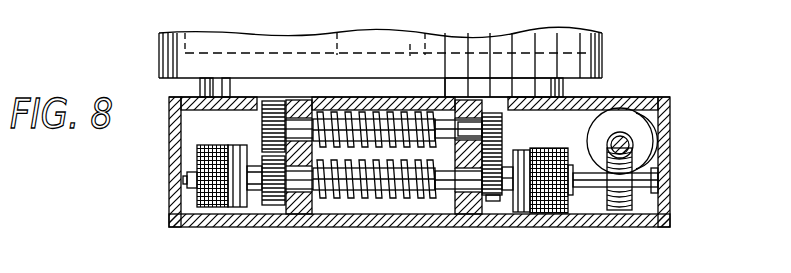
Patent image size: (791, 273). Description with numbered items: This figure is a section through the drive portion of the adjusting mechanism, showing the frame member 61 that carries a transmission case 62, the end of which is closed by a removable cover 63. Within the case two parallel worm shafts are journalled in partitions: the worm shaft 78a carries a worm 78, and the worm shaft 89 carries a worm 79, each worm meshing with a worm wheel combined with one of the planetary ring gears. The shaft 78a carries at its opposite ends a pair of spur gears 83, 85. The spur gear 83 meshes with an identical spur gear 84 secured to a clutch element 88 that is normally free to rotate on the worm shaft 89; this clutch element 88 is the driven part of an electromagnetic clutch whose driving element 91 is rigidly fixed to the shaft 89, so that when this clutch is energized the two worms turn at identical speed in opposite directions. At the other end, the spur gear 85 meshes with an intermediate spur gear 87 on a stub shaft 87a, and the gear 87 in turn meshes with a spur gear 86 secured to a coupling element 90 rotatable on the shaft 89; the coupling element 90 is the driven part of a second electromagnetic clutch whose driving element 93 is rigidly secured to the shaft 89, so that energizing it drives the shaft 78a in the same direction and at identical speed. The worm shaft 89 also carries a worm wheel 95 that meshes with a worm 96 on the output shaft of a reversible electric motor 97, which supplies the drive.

The frame member 61 is at (168, 50).
The transmission case 62 is at (172, 137).
The removable cover 63 is at (663, 228).
The worm 78 is at (349, 112).
The worm shaft 78a is at (469, 127).
The worm 79 is at (406, 200).
The spur gear 83 is at (262, 124).
The spur gear 84 is at (278, 203).
The spur gear 85 is at (502, 127).
The spur gear 86 is at (493, 201).
The intermediate spur gear 87 is at (508, 151).
The stub shaft 87a is at (460, 138).
The clutch element 88 is at (240, 201).
The worm shaft 89 is at (476, 186).
The coupling element 90 is at (520, 209).
The driving element 91 is at (217, 203).
The driving element 93 is at (559, 213).
The worm wheel 95 is at (623, 206).
The worm 96 is at (623, 140).
The reversible electric motor 97 is at (645, 138).